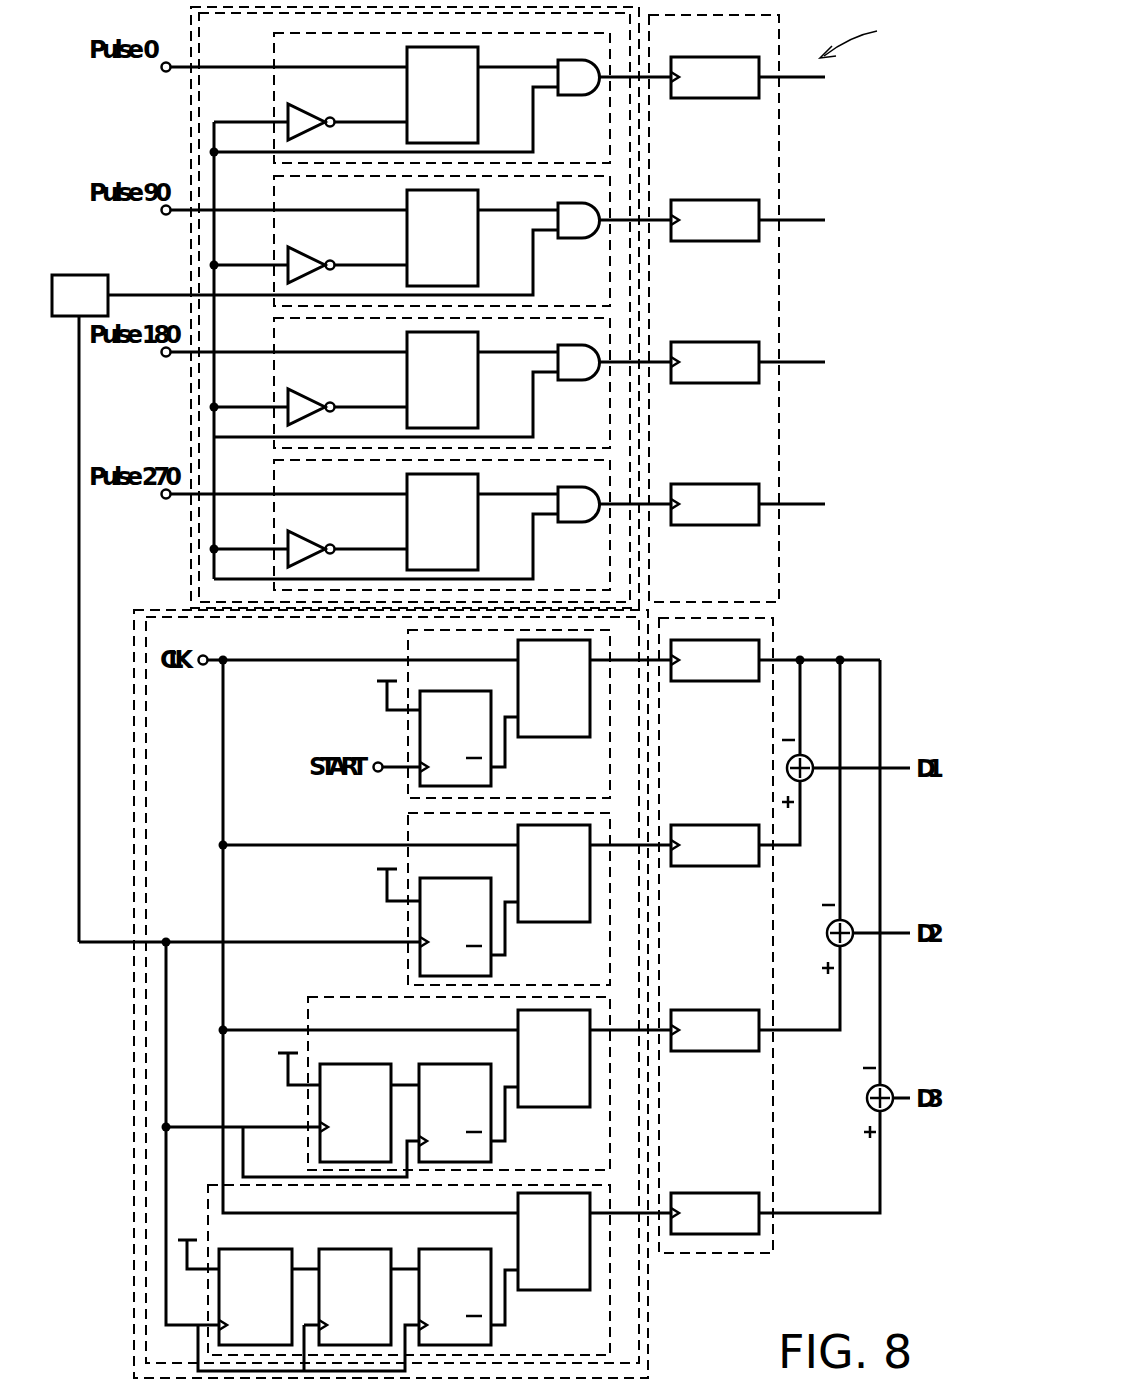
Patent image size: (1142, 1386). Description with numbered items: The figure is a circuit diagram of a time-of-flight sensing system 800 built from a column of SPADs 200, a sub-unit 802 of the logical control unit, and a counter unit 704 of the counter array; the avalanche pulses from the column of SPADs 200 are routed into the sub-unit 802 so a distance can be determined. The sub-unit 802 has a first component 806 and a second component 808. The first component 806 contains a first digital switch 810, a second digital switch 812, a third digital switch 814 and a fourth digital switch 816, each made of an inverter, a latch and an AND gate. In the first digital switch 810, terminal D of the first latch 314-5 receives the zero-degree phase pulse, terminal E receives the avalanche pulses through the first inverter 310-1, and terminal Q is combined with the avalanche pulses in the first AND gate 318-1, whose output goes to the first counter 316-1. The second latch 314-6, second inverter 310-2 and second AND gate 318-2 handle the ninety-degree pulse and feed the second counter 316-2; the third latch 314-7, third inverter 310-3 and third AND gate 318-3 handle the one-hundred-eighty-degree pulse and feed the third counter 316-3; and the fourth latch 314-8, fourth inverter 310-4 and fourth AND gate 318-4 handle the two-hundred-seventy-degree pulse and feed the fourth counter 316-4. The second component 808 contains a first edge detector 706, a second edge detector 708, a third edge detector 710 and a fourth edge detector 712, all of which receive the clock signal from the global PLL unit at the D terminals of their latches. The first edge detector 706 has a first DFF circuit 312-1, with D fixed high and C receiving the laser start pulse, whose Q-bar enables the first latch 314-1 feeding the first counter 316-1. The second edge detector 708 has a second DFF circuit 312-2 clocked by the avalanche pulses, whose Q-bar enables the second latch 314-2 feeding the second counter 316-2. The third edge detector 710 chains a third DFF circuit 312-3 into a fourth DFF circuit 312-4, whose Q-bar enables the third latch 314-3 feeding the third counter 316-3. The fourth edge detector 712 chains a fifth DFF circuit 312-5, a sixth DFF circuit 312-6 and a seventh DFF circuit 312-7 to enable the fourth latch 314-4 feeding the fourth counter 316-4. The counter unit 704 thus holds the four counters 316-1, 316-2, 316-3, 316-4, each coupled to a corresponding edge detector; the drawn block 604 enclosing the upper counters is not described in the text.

The column of SPADs 200 is at (133, 608).
The first inverter 310-1 is at (306, 112).
The second inverter 310-2 is at (306, 255).
The third inverter 310-3 is at (306, 397).
The fourth inverter 310-4 is at (306, 539).
The first DFF circuit 312-1 is at (432, 691).
The second DFF circuit 312-2 is at (432, 878).
The third DFF circuit 312-3 is at (333, 1064).
The fourth DFF circuit 312-4 is at (432, 1064).
The fifth DFF circuit 312-5 is at (233, 1249).
The sixth DFF circuit 312-6 is at (333, 1249).
The seventh DFF circuit 312-7 is at (432, 1249).
The first latch 314-1 is at (553, 737).
The second latch 314-2 is at (553, 922).
The third latch 314-3 is at (553, 1107).
The fourth latch 314-4 is at (553, 1290).
The first latch 314-5 is at (407, 58).
The second latch 314-6 is at (407, 201).
The third latch 314-7 is at (407, 343).
The fourth latch 314-8 is at (407, 485).
The first counter 316-1 is at (714, 57).
The second counter 316-2 is at (714, 200).
The third counter 316-3 is at (714, 342).
The fourth counter 316-4 is at (714, 484).
The first AND gate 318-1 is at (566, 96).
The second AND gate 318-2 is at (566, 239).
The third AND gate 318-3 is at (566, 381).
The fourth AND gate 318-4 is at (566, 523).
The counter block 604 is at (780, 576).
The counter unit 704 is at (722, 1254).
The first edge detector 706 is at (408, 740).
The second edge detector 708 is at (408, 957).
The third edge detector 710 is at (308, 1150).
The fourth edge detector 712 is at (206, 1190).
The time-of-flight sensing system 800 is at (873, 38).
The sub-unit 802 is at (134, 1292).
The first component 806 is at (199, 578).
The second component 808 is at (641, 1309).
The first digital switch 810 is at (274, 98).
The second digital switch 812 is at (274, 241).
The third digital switch 814 is at (274, 383).
The fourth digital switch 816 is at (274, 525).